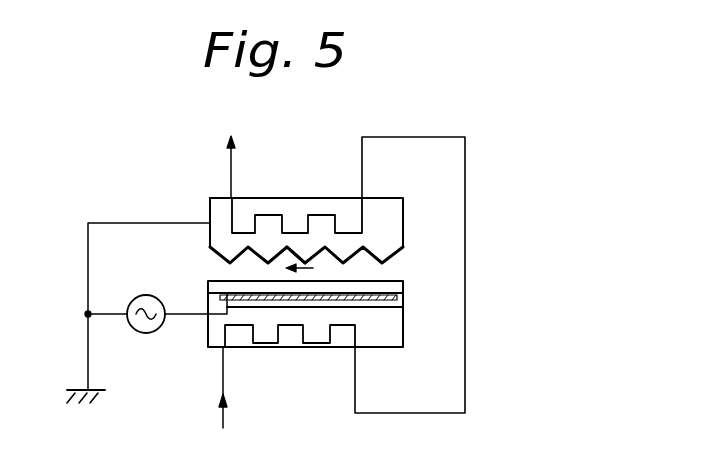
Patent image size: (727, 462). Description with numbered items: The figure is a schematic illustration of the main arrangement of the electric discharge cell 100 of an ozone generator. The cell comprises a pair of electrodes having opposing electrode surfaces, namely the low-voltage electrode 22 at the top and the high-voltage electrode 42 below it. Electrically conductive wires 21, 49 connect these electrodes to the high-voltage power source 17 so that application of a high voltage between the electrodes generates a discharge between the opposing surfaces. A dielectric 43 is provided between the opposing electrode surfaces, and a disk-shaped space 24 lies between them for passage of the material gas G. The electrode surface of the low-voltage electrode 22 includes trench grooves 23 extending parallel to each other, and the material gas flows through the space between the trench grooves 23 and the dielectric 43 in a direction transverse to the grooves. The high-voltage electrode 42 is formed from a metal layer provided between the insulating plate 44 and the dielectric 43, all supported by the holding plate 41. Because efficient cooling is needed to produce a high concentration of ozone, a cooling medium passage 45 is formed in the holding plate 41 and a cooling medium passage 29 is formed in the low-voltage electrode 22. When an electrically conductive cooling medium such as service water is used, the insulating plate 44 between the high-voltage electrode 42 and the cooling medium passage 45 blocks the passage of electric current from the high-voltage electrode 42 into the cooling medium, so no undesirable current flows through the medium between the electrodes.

The electric discharge cell 100 is at (183, 185).
The electrically conductive wire 21 is at (152, 222).
The low-voltage electrode 22 is at (395, 220).
The trench grooves 23 is at (290, 258).
The disk-shaped space 24 is at (373, 272).
The cooling medium passage 29 is at (268, 213).
The holding plate 41 is at (388, 332).
The high-voltage electrode 42 is at (400, 294).
The dielectric 43 is at (393, 286).
The insulating plate 44 is at (388, 304).
The cooling medium passage 45 is at (295, 318).
The electrically conductive wire 49 is at (185, 312).
The high-voltage power source 17 is at (157, 333).